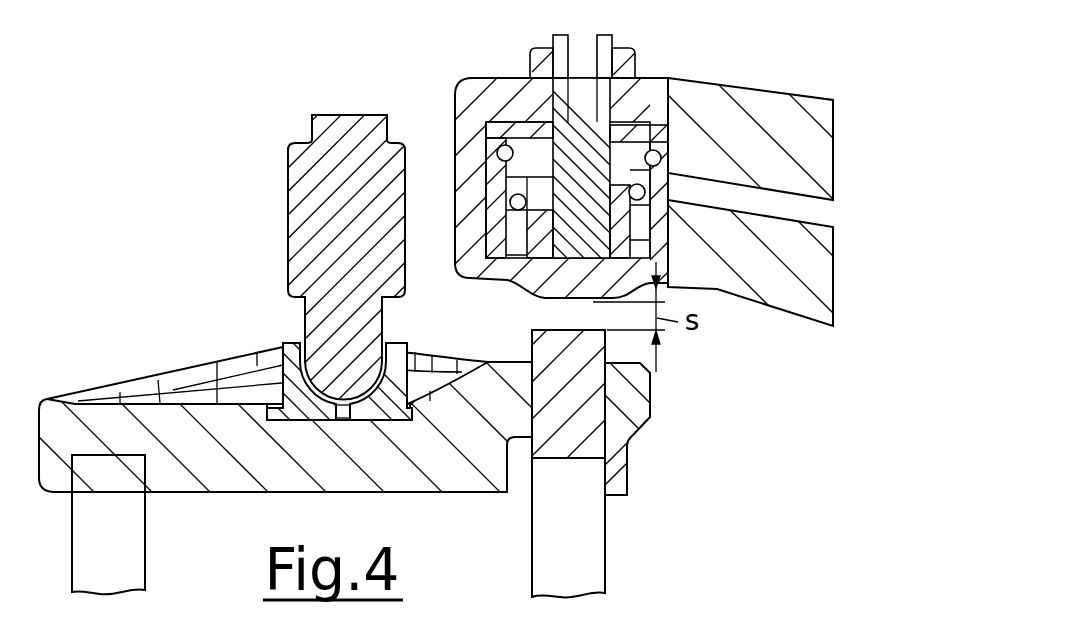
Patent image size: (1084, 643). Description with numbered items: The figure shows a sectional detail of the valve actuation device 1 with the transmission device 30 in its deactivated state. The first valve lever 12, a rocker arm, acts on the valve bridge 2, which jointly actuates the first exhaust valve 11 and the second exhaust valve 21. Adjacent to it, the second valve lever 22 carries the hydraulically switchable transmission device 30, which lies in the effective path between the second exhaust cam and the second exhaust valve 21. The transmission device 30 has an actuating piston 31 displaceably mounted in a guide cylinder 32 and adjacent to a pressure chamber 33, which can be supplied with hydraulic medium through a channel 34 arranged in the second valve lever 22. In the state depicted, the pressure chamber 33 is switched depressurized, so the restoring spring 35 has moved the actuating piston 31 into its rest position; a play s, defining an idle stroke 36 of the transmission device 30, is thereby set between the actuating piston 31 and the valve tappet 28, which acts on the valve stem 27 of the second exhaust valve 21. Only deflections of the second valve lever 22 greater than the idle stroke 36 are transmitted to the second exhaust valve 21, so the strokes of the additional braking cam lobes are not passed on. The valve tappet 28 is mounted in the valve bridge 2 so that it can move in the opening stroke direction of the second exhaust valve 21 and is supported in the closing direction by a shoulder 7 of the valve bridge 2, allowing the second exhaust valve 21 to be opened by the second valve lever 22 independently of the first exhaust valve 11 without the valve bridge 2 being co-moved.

The valve actuation device 1 is at (173, 277).
The valve bridge 2 is at (447, 480).
The shoulder 7 is at (622, 450).
The first exhaust valve 11 is at (130, 568).
The first valve lever 12 is at (305, 192).
The second exhaust valve 21 is at (606, 577).
The second valve lever 22 is at (712, 108).
The valve stem 27 is at (585, 534).
The valve tappet 28 is at (563, 400).
The transmission device 30 is at (495, 284).
The actuating piston 31 is at (500, 172).
The guide cylinder 32 is at (652, 126).
The pressure chamber 33 is at (537, 153).
The channel 34 is at (763, 200).
The restoring spring 35 is at (510, 204).
The idle stroke 36 is at (625, 317).